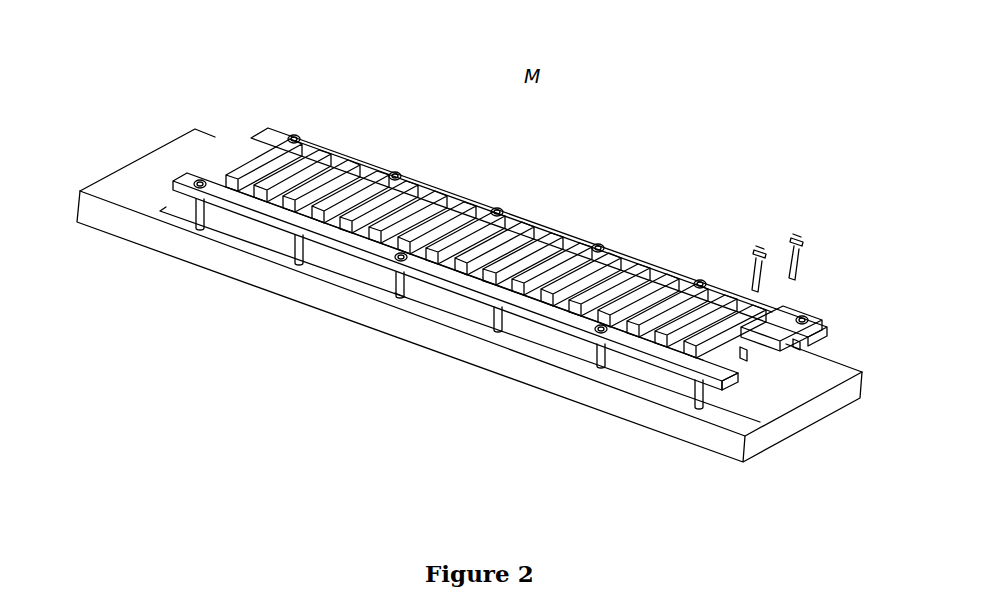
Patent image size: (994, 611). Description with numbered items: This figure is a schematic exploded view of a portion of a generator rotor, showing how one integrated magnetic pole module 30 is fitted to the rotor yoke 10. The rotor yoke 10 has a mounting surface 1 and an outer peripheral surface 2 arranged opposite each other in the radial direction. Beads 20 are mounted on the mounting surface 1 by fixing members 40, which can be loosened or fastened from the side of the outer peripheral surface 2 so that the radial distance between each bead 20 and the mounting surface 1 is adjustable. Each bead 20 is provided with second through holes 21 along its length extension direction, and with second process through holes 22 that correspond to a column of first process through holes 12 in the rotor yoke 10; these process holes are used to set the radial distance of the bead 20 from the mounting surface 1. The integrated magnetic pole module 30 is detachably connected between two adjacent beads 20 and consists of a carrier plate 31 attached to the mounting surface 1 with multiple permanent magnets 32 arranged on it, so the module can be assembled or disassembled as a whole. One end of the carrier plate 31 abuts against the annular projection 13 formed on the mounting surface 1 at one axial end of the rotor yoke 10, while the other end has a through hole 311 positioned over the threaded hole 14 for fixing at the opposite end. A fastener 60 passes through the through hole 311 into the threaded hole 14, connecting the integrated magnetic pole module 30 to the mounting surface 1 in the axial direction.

The mounting surface 1 is at (823, 371).
The outer peripheral surface 2 is at (807, 430).
The rotor yoke 10 is at (297, 293).
The first process through holes 12 is at (244, 243).
The annular projection 13 is at (118, 178).
The threaded hole for fixing 14 is at (773, 380).
The bead 20 is at (440, 185).
The second through holes 21 is at (613, 240).
The second process through holes 22 is at (335, 158).
The integrated magnetic pole module 30 is at (248, 63).
The carrier plate 31 is at (225, 147).
The permanent magnets 32 is at (273, 140).
The through hole 311 is at (803, 310).
The fixing member 40 is at (395, 293).
The fastener 60 is at (810, 250).